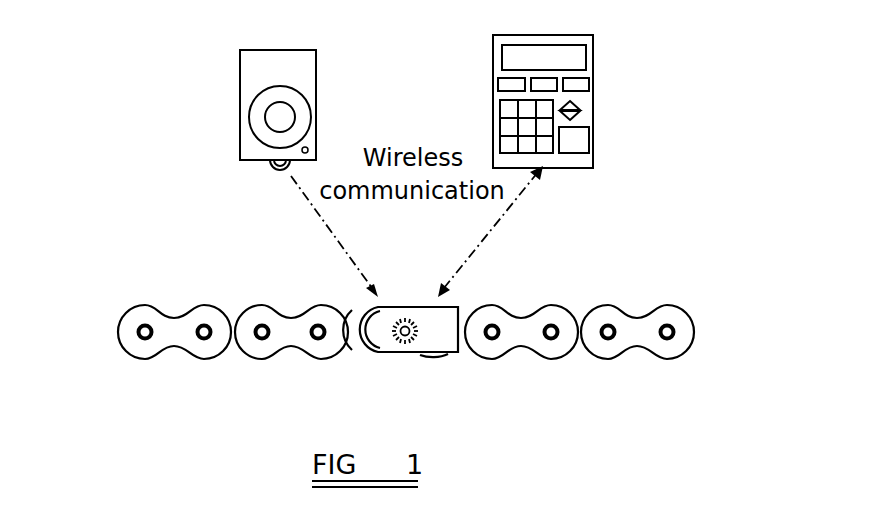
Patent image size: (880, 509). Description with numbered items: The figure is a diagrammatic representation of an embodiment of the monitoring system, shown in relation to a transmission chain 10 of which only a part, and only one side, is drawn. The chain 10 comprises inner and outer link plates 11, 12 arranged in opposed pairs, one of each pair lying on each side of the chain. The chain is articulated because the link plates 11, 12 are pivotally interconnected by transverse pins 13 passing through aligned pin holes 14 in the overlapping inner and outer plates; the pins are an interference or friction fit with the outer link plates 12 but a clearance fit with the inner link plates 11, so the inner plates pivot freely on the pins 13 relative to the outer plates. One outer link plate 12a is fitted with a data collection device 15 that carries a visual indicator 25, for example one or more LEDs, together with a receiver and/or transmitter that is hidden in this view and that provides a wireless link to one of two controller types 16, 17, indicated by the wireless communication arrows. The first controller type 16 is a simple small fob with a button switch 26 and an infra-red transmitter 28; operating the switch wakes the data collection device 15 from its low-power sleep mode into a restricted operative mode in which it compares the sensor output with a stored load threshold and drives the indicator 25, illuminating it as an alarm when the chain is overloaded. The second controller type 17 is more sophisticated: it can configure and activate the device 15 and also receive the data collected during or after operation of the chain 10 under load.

The transmission chain 10 is at (528, 345).
The inner link plate 11 is at (233, 358).
The outer link plate 12 is at (290, 318).
The outer link plate fitted with data collection device 12a is at (402, 353).
The transverse pin 13 is at (305, 352).
The pin hole 14 is at (551, 322).
The data collection device 15 is at (350, 352).
The first controller type 16 is at (245, 58).
The second controller type 17 is at (590, 72).
The visual indicator 25 is at (394, 353).
The button switch 26 is at (280, 115).
The infra-red transmitter 28 is at (270, 163).